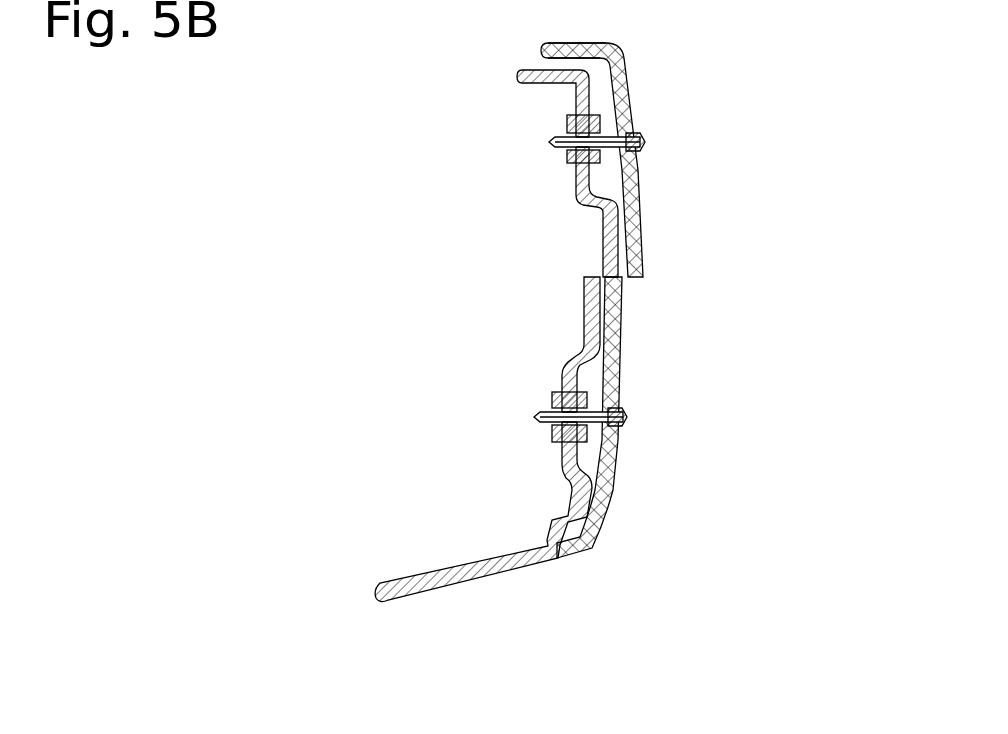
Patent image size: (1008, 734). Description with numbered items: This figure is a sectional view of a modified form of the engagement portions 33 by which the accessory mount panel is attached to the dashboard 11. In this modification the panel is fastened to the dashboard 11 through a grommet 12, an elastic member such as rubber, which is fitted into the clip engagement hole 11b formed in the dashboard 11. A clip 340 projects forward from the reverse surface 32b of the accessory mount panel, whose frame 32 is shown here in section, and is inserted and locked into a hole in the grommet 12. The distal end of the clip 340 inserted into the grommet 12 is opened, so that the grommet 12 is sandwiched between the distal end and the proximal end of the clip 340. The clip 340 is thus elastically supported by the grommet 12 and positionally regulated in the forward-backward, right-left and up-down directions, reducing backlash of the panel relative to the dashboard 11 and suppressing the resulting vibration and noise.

The dashboard 11 is at (522, 90).
The clip engagement hole 11b is at (558, 142).
The grommet 12 is at (565, 175).
The frame 32 is at (627, 72).
The reverse surface 32b is at (578, 62).
The engagement portion 33 is at (508, 311).
The clip 340 is at (562, 148).